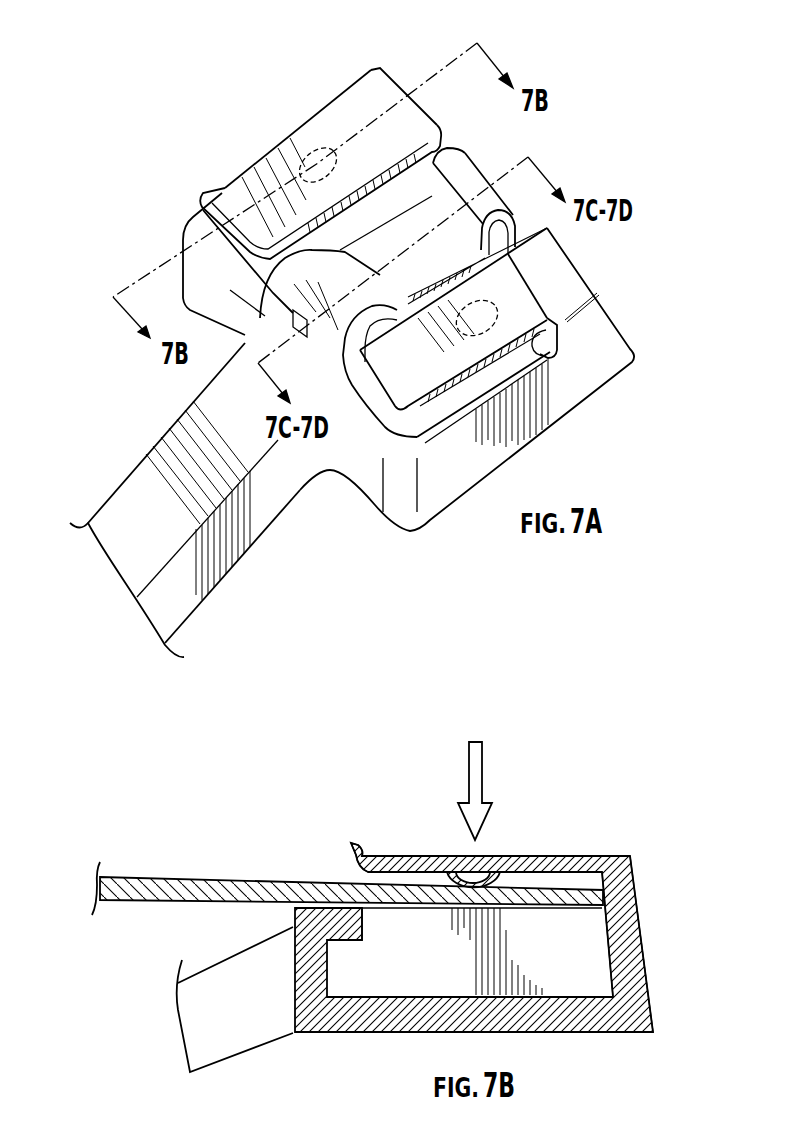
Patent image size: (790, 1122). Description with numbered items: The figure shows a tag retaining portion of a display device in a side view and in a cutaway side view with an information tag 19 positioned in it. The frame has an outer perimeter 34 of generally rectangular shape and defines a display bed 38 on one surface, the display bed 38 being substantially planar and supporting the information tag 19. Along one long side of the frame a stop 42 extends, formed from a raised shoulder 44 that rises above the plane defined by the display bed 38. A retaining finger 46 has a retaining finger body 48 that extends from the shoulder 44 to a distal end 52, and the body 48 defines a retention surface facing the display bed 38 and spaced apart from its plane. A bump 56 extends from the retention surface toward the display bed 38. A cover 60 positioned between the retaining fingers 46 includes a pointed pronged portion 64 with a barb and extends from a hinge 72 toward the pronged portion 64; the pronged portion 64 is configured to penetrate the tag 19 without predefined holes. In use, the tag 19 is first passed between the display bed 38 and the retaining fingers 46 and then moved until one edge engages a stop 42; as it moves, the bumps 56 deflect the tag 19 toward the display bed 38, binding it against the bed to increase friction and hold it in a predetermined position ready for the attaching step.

In FIG. 7B, the information tag 19 is at (147, 877).
In FIG. 7A, the outer perimeter 34 is at (193, 217).
In FIG. 7B, the outer perimeter 34 is at (327, 915).
In FIG. 7A, the display bed 38 is at (343, 430).
In FIG. 7B, the display bed 38 is at (357, 930).
In FIG. 7A, the stop 42 is at (530, 340).
In FIG. 7B, the stop 42 is at (587, 898).
In FIG. 7A, the raised shoulder 44 is at (371, 70).
In FIG. 7A, the retaining finger 46 is at (320, 133).
In FIG. 7B, the retaining finger 46 is at (385, 857).
In FIG. 7A, the retaining finger body 48 is at (358, 110).
In FIG. 7B, the distal end 52 is at (363, 843).
In FIG. 7A, the bump 56 is at (313, 153).
In FIG. 7B, the bump 56 is at (475, 892).
In FIG. 7A, the cover 60 is at (403, 208).
In FIG. 7A, the pronged portion 64 is at (290, 313).
In FIG. 7A, the hinge 72 is at (473, 175).